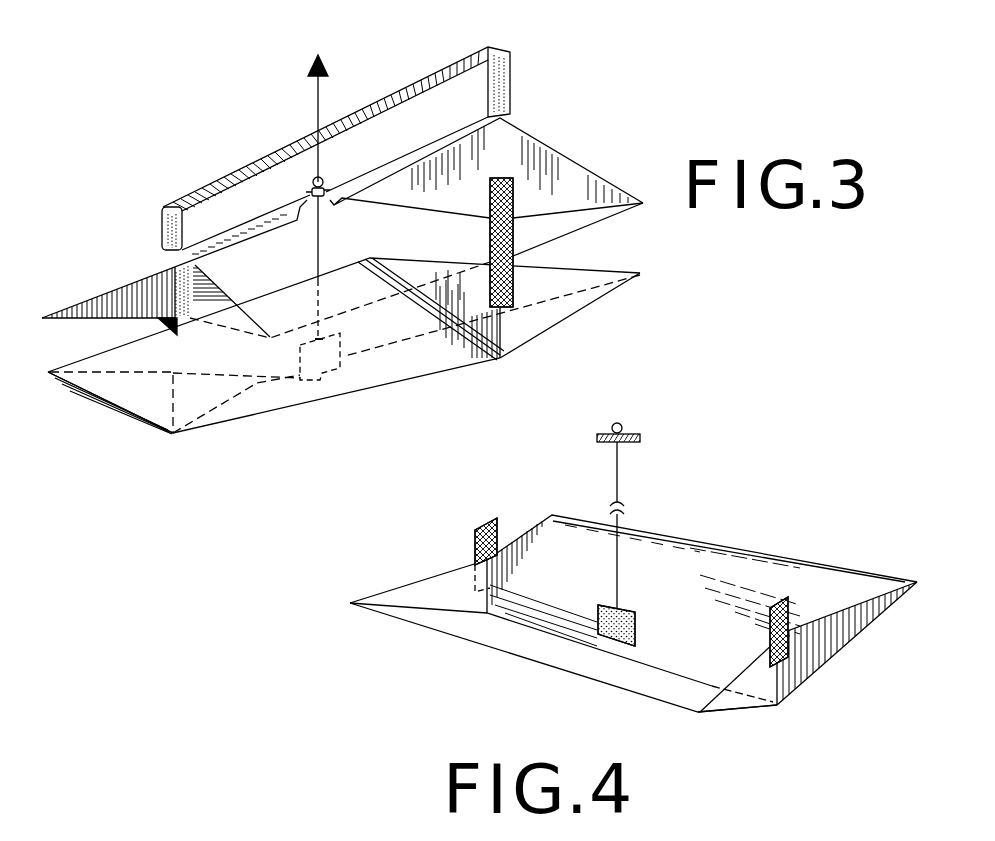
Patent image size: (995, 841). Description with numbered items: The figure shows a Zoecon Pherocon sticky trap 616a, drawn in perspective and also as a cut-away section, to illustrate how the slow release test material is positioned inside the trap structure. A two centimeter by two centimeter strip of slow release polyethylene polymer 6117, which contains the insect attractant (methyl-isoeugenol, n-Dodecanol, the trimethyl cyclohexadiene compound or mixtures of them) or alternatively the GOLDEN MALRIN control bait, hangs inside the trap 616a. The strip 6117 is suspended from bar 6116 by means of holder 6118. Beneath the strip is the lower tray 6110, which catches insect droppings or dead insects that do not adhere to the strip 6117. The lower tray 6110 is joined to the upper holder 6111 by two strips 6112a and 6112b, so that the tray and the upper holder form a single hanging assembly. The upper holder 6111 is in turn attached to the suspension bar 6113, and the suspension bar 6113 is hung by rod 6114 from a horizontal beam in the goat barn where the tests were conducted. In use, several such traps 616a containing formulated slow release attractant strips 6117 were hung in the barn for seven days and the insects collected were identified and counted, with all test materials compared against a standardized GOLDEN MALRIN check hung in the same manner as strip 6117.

In FIG. 3, the lower tray 6110 is at (573, 308).
In FIG. 4, the lower tray 6110 is at (840, 647).
In FIG. 3, the upper holder 6111 is at (572, 176).
In FIG. 3, the strip 6112a is at (490, 235).
In FIG. 4, the strip 6112a is at (790, 620).
In FIG. 4, the strip 6112b is at (473, 537).
In FIG. 3, the suspension bar 6113 is at (377, 98).
In FIG. 3, the rod 6114 is at (316, 94).
In FIG. 3, the bar 6116 is at (365, 165).
In FIG. 3, the slow release polymer strip 6117 is at (308, 383).
In FIG. 4, the slow release polymer strip 6117 is at (597, 620).
In FIG. 3, the holder 6118 is at (313, 178).
In FIG. 4, the holder 6118 is at (623, 428).
In FIG. 3, the sticky trap 616a is at (130, 422).
In FIG. 4, the sticky trap 616a is at (775, 713).